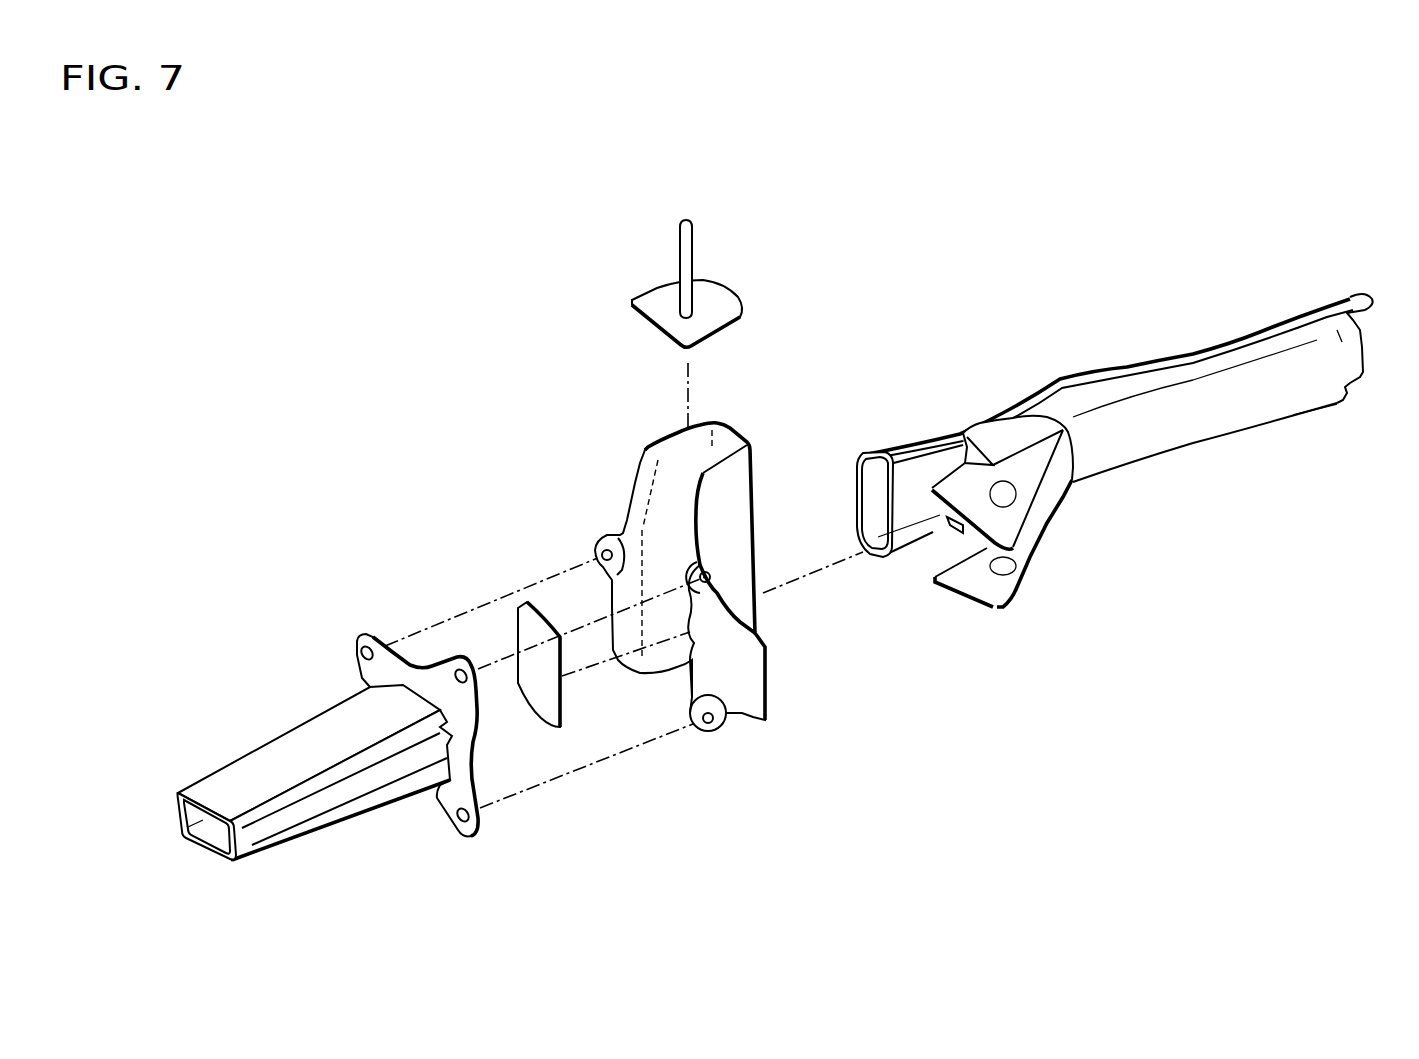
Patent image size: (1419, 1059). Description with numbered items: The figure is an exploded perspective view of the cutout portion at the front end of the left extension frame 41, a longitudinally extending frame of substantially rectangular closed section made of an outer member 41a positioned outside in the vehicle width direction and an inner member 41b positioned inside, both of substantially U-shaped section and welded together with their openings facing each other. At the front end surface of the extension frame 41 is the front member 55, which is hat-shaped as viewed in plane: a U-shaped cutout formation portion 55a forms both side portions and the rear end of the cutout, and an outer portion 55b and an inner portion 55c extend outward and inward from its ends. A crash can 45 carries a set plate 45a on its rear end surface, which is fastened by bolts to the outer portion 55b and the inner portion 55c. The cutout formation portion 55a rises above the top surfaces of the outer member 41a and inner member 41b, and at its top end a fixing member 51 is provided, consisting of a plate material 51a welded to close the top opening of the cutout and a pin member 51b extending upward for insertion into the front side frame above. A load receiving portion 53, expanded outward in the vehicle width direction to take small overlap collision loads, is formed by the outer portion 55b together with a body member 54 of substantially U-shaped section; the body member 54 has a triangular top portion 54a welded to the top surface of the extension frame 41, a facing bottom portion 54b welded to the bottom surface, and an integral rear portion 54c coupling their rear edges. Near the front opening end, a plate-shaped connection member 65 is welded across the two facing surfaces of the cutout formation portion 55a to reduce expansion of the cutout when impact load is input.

The extension frame 41 is at (1115, 369).
The outer member 41a is at (1298, 367).
The inner member 41b is at (1228, 350).
The crash can 45 is at (361, 747).
The set plate 45a is at (465, 733).
The fixing member 51 is at (613, 283).
The plate material 51a is at (660, 302).
The pin member 51b is at (684, 253).
The load receiving portion 53 is at (938, 486).
The body member 54 is at (1049, 480).
The top portion 54a is at (1022, 430).
The bottom portion 54b is at (977, 580).
The rear portion 54c is at (1045, 505).
The front member 55 is at (706, 600).
The cutout formation portion 55a is at (733, 480).
The outer portion 55b is at (752, 697).
The inner portion 55c is at (605, 566).
The connection member 65 is at (545, 680).